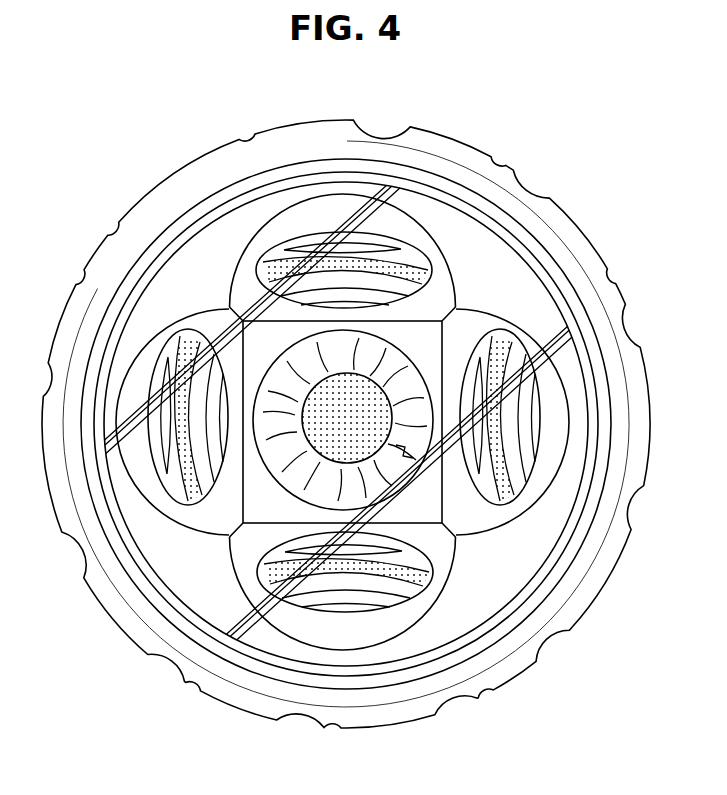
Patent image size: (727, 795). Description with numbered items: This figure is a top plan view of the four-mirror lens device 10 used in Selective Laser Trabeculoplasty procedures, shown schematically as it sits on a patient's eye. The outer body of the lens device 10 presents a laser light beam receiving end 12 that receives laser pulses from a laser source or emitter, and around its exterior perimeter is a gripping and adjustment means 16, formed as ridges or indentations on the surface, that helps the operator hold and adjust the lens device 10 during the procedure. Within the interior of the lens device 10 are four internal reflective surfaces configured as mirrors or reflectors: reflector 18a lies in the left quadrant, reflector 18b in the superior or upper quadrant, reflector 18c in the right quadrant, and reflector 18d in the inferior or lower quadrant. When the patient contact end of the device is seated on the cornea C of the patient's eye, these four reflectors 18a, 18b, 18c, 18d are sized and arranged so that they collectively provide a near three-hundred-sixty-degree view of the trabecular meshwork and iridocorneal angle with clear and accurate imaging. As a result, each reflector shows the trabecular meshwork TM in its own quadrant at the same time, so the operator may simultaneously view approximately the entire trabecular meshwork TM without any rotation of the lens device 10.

The lens device 10 is at (498, 100).
The laser light beam receiving end 12 is at (178, 237).
The gripping and adjustment means 16 is at (82, 297).
The cornea C is at (330, 405).
The reflector 18a is at (163, 500).
The reflector 18b is at (433, 230).
The reflector 18c is at (549, 489).
The reflector 18d is at (317, 618).
The trabecular meshwork TM is at (400, 560).